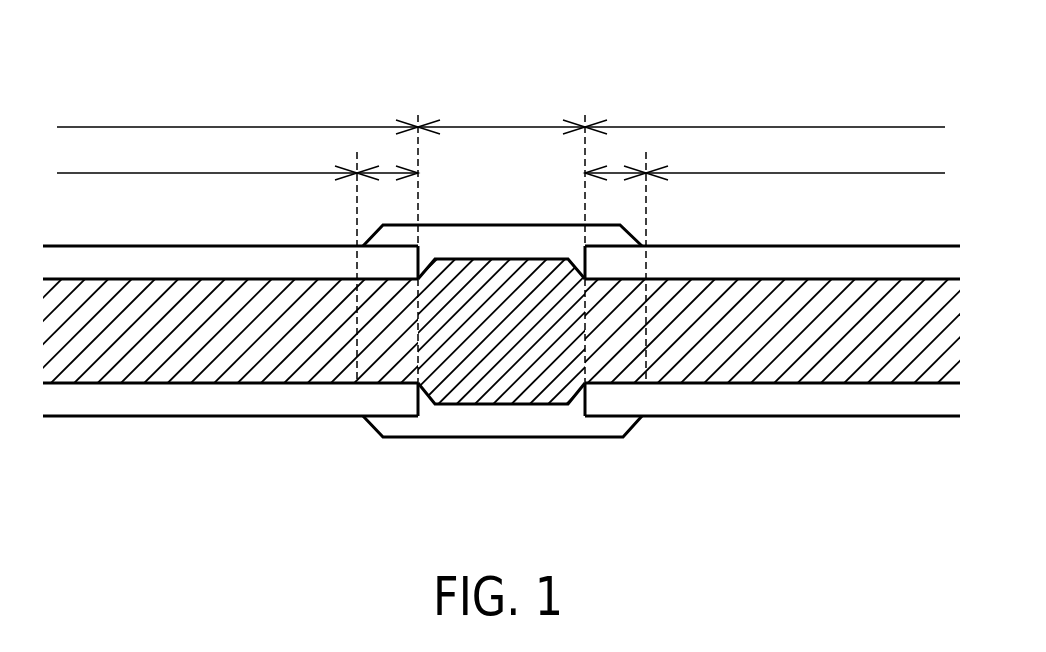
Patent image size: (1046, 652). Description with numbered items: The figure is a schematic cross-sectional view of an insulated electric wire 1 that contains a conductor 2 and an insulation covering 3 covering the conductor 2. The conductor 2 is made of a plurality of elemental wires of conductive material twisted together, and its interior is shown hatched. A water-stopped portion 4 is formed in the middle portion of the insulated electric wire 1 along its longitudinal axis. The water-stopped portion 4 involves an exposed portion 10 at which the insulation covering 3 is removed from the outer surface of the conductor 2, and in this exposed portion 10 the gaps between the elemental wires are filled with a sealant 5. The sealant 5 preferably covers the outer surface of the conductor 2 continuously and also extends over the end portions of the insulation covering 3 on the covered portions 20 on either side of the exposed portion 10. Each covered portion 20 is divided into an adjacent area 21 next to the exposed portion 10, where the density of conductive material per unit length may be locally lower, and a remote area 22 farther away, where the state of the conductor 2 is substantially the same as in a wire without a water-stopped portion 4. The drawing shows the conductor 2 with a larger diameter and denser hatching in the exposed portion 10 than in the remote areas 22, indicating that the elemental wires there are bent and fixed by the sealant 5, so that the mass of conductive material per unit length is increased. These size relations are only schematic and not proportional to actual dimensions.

The insulated electric wire 1 is at (842, 77).
The conductor 2 is at (835, 370).
The insulation covering 3 is at (747, 402).
The water-stopped portion 4 is at (408, 457).
The sealant 5 is at (545, 427).
The exposed portion 10 is at (501, 115).
The covered portion 20 is at (501, 116).
The adjacent area 21 is at (501, 160).
The remote area 22 is at (501, 160).